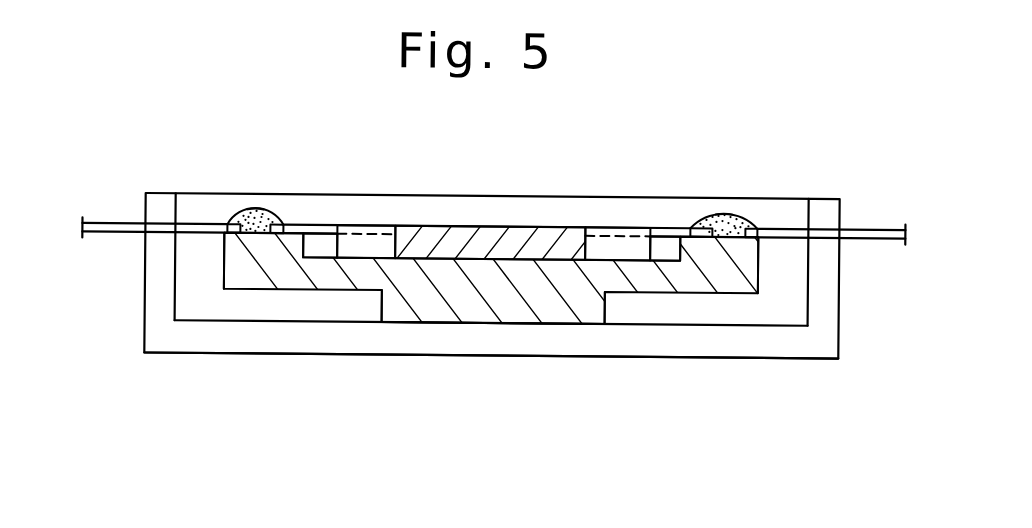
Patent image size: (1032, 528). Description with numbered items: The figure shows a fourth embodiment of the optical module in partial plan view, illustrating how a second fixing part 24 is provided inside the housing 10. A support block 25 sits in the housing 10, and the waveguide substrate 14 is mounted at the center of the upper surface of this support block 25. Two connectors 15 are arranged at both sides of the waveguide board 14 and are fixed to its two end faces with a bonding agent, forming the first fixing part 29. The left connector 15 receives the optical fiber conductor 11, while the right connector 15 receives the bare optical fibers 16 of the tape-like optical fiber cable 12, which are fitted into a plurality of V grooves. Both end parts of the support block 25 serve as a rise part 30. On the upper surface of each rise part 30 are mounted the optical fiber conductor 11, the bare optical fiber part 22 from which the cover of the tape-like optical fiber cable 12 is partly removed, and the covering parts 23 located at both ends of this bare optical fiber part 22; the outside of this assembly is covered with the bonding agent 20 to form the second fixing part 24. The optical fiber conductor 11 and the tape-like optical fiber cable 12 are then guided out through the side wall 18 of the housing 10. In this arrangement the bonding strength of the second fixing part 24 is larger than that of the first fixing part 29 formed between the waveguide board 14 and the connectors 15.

The housing 10 is at (475, 358).
The optical fiber conductor 11 is at (107, 215).
The tape-like optical fiber cable 12 is at (862, 215).
The waveguide substrate 14 is at (477, 227).
The connector 15 is at (351, 215).
The bare optical fibers 16 is at (741, 238).
The side wall 18 is at (144, 281).
The bonding agent 20 is at (235, 217).
The bare optical fiber part 22 is at (525, 309).
The covering parts 23 is at (280, 225).
The second fixing part 24 is at (254, 200).
The support block 25 is at (650, 285).
The first fixing part 29 is at (396, 215).
The rise part 30 is at (223, 281).